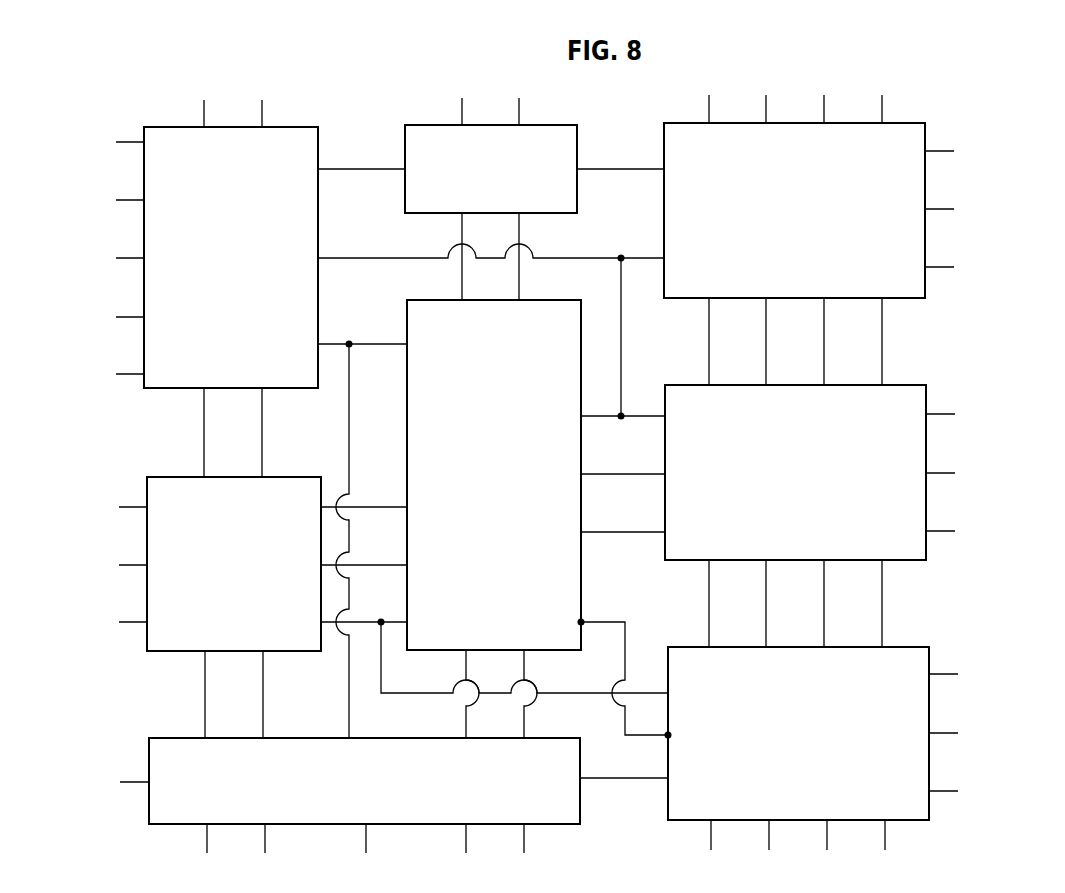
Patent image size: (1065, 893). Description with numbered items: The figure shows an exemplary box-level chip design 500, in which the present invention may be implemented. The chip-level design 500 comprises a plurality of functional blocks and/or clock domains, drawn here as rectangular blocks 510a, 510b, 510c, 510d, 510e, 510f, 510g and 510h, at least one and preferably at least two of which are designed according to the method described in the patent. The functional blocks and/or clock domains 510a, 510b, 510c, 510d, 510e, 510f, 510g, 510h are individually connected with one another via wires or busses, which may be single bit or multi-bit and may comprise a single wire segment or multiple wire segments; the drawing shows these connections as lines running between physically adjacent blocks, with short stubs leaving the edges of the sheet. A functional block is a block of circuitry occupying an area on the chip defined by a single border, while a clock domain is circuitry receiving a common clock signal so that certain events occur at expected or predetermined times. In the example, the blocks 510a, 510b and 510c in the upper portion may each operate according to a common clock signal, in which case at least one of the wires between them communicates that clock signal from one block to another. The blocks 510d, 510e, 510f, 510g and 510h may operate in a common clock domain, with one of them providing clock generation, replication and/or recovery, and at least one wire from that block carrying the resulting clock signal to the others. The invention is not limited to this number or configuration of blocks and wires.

The chip-level design 500 is at (183, 67).
The functional block 510a is at (152, 127).
The functional block 510b is at (416, 125).
The functional block 510c is at (915, 123).
The functional block 510d is at (147, 520).
The functional block 510e is at (581, 590).
The functional block 510f is at (926, 519).
The functional block 510g is at (149, 755).
The functional block 510h is at (929, 778).